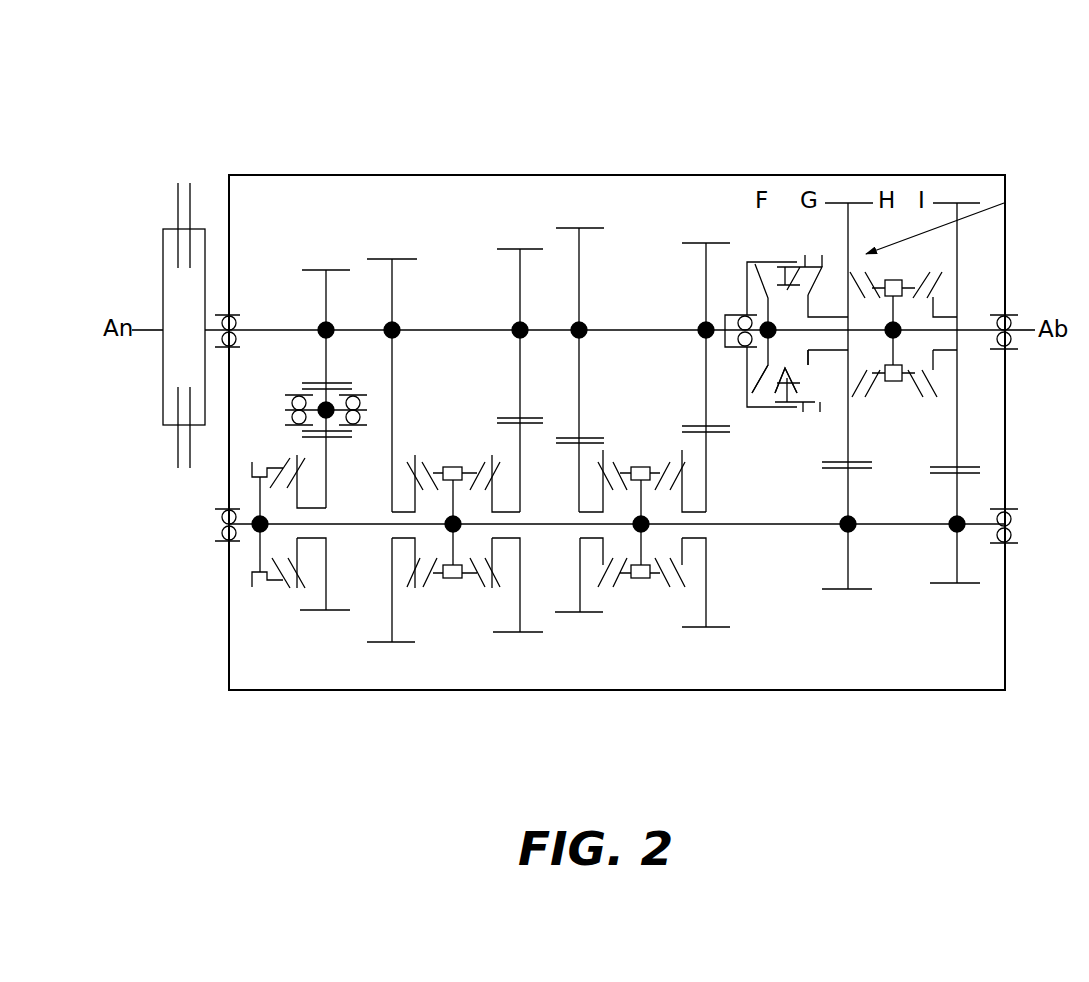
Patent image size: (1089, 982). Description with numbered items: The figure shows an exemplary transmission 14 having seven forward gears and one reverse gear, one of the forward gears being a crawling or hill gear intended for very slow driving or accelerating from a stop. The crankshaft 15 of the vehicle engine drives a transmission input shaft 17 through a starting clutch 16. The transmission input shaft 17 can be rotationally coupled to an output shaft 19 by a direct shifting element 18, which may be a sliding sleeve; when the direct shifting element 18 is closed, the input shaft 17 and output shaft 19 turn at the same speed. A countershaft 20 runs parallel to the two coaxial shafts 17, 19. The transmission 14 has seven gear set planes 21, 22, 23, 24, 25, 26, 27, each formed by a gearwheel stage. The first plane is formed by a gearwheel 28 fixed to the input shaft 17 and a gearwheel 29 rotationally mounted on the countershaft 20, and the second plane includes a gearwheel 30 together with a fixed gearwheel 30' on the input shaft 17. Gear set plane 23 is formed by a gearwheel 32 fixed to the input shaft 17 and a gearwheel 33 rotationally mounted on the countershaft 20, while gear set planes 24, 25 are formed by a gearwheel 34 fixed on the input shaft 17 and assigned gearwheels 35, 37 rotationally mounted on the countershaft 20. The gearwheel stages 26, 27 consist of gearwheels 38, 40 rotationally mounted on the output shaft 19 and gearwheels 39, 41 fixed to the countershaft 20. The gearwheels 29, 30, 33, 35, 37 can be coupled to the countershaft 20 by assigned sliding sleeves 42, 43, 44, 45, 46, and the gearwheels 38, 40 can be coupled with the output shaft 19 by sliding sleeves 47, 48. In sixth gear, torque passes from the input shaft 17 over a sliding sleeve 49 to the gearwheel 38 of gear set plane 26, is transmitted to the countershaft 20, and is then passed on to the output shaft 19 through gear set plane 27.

The transmission 14 is at (441, 124).
The crankshaft 15 is at (140, 330).
The starting clutch 16 is at (182, 171).
The transmission input shaft 17 is at (273, 330).
The direct shifting element 18 is at (764, 279).
The output shaft 19 is at (1027, 330).
The countershaft 20 is at (787, 526).
The gear set plane 21 is at (342, 634).
The gear set plane 22 is at (395, 643).
The gear set plane 23 is at (530, 643).
The gear set plane 24 is at (588, 653).
The gear set plane 25 is at (710, 644).
The gear set plane 26 is at (852, 615).
The gear set plane 27 is at (963, 595).
The gearwheel 28 is at (328, 307).
The gearwheel 29 is at (323, 588).
The gearwheel 30 is at (417, 583).
The fixed gear 30' is at (421, 385).
The gearwheel 32 is at (520, 308).
The gearwheel 33 is at (520, 612).
The gearwheel 34 is at (581, 272).
The gearwheel 35 is at (706, 308).
The gearwheel 37 is at (705, 585).
The gearwheel 38 is at (848, 235).
The gearwheel 39 is at (847, 553).
The gearwheel 40 is at (957, 240).
The gearwheel 41 is at (957, 557).
The sliding sleeve 42 is at (268, 458).
The sliding sleeve 43 is at (424, 467).
The sliding sleeve 44 is at (476, 467).
The sliding sleeve 45 is at (614, 467).
The sliding sleeve 46 is at (664, 467).
The sliding sleeve 47 is at (877, 390).
The sliding sleeve 48 is at (918, 404).
The sliding sleeve 49 is at (808, 365).